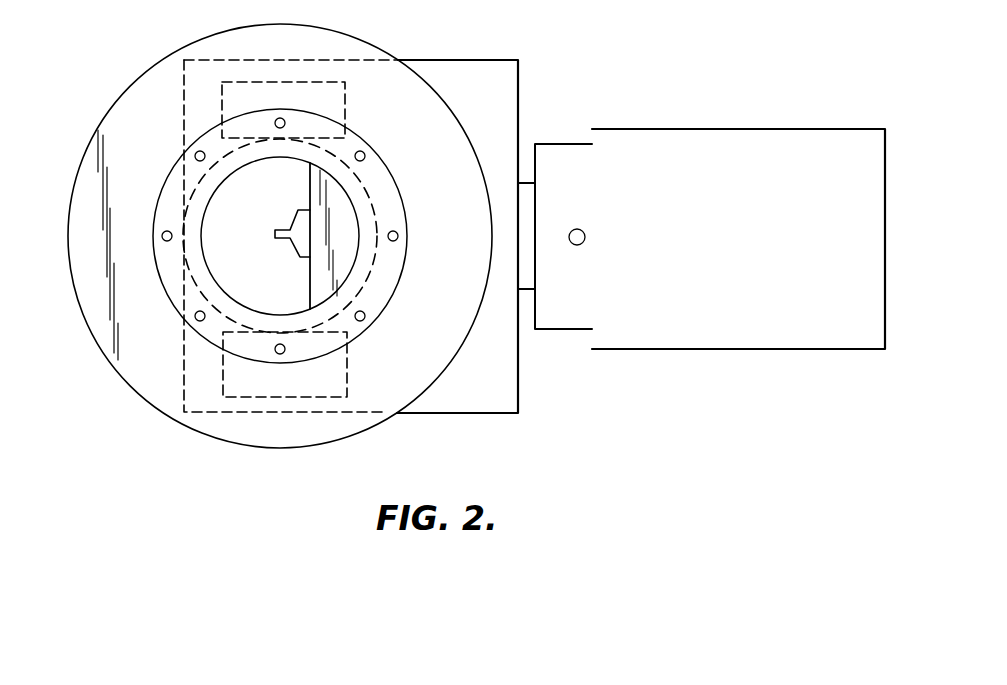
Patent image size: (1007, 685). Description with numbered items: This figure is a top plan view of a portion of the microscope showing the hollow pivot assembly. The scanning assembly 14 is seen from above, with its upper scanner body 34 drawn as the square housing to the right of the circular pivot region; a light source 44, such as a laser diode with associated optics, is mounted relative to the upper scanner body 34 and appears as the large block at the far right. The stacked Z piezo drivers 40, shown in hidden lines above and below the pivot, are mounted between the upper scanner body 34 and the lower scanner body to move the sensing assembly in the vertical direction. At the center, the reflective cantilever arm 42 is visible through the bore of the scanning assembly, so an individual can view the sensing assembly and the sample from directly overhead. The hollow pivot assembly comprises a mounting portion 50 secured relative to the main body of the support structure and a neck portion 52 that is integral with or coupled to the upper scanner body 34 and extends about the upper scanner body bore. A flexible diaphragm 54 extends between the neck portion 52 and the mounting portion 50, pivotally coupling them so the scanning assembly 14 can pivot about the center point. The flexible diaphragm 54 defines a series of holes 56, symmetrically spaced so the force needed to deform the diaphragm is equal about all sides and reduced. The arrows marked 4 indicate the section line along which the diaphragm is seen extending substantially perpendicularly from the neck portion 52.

The scanning assembly 14 is at (518, 106).
The upper scanner body 34 is at (517, 385).
The light source 44 is at (748, 129).
The Z piezo driver 40 is at (345, 103).
The holes 56 is at (195, 155).
The neck portion 52 is at (218, 273).
The flexible diaphragm 54 is at (218, 273).
The mounting portion 50 is at (118, 360).
The cantilever arm 42 is at (286, 230).
The section line 4- 4 is at (45, 237).